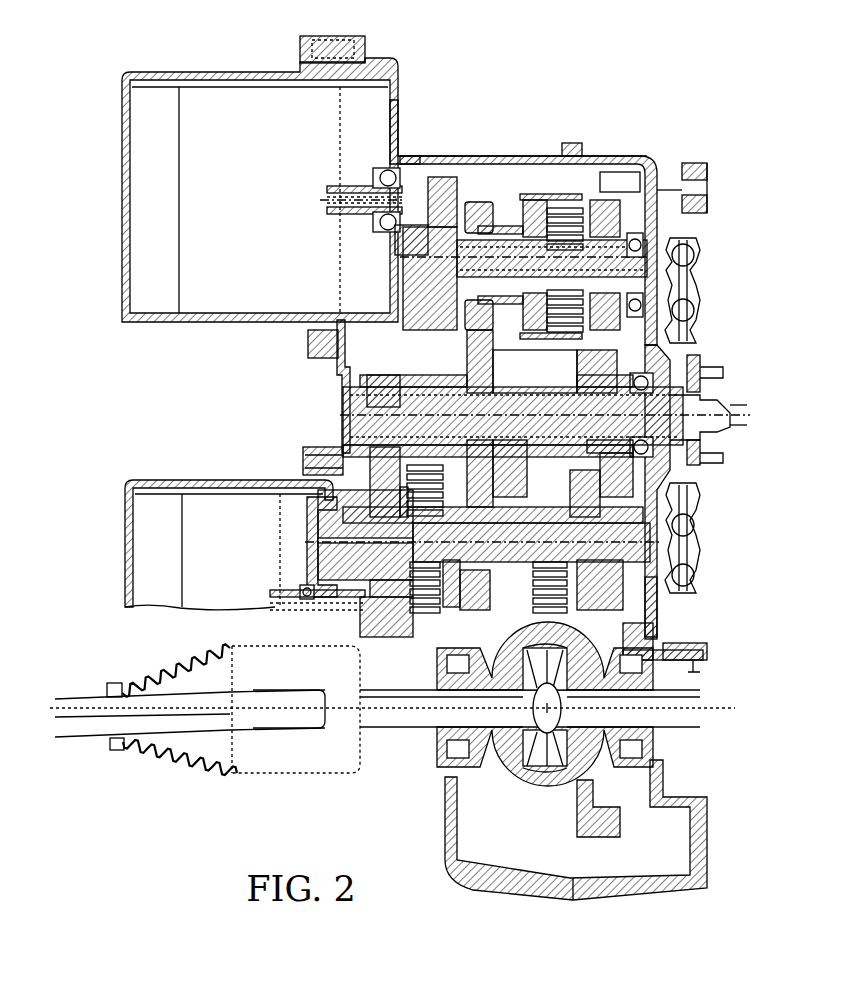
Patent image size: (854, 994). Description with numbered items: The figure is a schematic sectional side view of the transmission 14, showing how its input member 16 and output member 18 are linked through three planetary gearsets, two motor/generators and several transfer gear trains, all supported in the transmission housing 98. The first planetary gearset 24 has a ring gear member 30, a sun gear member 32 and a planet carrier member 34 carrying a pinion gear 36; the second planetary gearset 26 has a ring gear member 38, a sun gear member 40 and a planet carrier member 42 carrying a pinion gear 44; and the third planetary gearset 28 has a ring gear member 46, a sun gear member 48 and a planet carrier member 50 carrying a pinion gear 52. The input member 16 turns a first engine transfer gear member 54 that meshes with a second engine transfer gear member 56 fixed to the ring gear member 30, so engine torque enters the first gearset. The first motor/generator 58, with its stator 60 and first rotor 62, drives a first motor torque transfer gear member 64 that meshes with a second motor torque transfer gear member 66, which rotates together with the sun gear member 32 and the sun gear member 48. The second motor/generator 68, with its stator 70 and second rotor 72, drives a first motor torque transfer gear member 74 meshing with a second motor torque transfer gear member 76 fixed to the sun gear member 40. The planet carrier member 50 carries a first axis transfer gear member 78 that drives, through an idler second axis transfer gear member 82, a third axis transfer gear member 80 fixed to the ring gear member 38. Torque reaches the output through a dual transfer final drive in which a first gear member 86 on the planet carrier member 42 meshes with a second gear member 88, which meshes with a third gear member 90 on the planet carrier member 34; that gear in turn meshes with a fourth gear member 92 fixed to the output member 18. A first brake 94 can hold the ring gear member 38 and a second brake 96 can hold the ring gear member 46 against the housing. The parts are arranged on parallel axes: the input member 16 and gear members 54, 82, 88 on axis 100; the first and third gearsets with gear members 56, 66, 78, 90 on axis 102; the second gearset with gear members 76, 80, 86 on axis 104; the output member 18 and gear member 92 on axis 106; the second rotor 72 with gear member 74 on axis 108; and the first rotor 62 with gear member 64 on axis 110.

The transmission 14 is at (535, 78).
The input member 16 is at (713, 400).
The output member 18 is at (332, 773).
The first planetary gearset 24 is at (613, 680).
The second planetary gearset 26 is at (598, 158).
The third planetary gearset 28 is at (552, 625).
The ring gear member 30 is at (690, 445).
The sun gear member 32 is at (667, 528).
The planet carrier member 34 is at (620, 480).
The pinion gear 36 is at (620, 500).
The ring gear member 38 is at (565, 205).
The sun gear member 40 is at (590, 247).
The planet carrier member 42 is at (625, 225).
The pinion gear 44 is at (530, 215).
The ring gear member 46 is at (403, 503).
The sun gear member 48 is at (330, 473).
The planet carrier member 50 is at (372, 500).
The pinion gear 52 is at (373, 487).
The first engine transfer gear member 54 is at (520, 386).
The second engine transfer gear member 56 is at (507, 493).
The first motor/generator 58 is at (128, 505).
The stator 60 is at (155, 565).
The first rotor 62 is at (300, 592).
The first motor torque transfer gear member 64 is at (353, 600).
The second motor torque transfer gear member 66 is at (353, 567).
The second motor/generator 68 is at (130, 74).
The stator 70 is at (148, 148).
The second rotor 72 is at (378, 172).
The first motor torque transfer gear member 74 is at (432, 190).
The second motor torque transfer gear member 76 is at (440, 310).
The first axis transfer gear member 78 is at (383, 610).
The third axis transfer gear member 80 is at (478, 205).
The second axis transfer gear member 82 is at (390, 378).
The first gear member 86 is at (657, 312).
The second gear member 88 is at (617, 363).
The third gear member 90 is at (600, 573).
The fourth gear member 92 is at (637, 580).
The first brake 94 is at (585, 182).
The second brake 96 is at (470, 622).
The transmission housing 98 is at (515, 156).
The axis 100 is at (743, 405).
The axis 102 is at (647, 587).
The axis 104 is at (657, 233).
The axis 106 is at (713, 705).
The axis 108 is at (345, 188).
The axis 110 is at (290, 607).